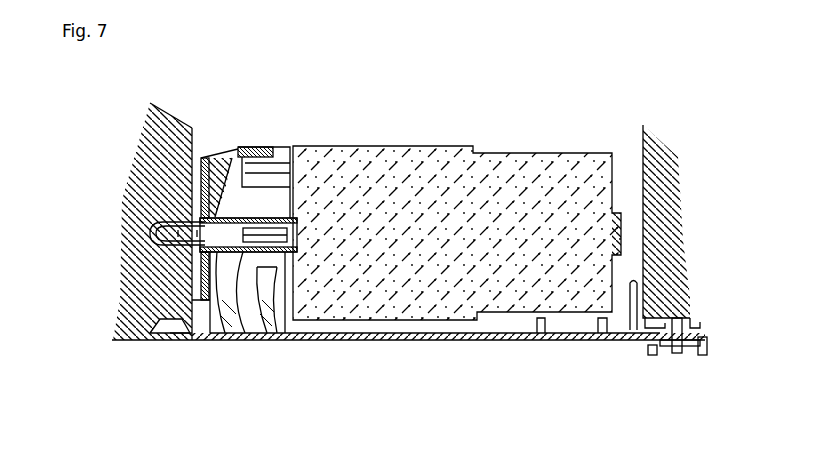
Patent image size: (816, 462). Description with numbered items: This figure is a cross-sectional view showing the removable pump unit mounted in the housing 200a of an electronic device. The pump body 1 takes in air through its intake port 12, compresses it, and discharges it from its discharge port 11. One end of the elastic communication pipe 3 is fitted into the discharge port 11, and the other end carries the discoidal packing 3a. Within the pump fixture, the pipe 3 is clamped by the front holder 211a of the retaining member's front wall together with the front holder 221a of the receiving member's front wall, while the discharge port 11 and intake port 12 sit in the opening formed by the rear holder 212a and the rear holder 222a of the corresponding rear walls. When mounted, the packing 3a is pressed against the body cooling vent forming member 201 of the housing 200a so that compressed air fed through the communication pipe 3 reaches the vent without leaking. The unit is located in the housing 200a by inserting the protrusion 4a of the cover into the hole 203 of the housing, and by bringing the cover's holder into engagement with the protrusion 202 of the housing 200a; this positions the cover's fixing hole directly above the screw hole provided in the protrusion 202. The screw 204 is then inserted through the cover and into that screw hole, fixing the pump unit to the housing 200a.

The pump body 1 is at (400, 167).
The communication pipe 3 is at (192, 128).
The packing 3a is at (192, 192).
The protrusion 4a is at (165, 320).
The discharge port 11 is at (250, 342).
The intake port 12 is at (299, 145).
The body cooling vent forming member 201 is at (150, 237).
The protrusion 202 is at (687, 323).
The hole 203 is at (178, 342).
The screw 204 is at (675, 353).
The front holder 211a is at (200, 172).
The rear holder 212a is at (266, 147).
The front holder 221a is at (222, 342).
The rear holder 222a is at (267, 343).
The housing 200a is at (143, 343).